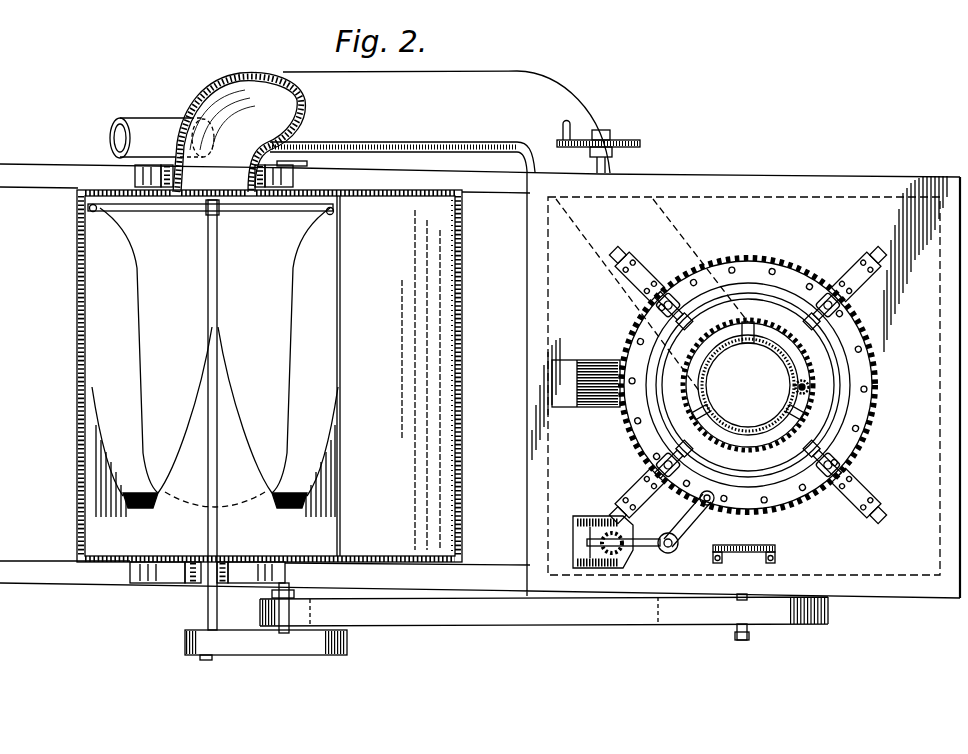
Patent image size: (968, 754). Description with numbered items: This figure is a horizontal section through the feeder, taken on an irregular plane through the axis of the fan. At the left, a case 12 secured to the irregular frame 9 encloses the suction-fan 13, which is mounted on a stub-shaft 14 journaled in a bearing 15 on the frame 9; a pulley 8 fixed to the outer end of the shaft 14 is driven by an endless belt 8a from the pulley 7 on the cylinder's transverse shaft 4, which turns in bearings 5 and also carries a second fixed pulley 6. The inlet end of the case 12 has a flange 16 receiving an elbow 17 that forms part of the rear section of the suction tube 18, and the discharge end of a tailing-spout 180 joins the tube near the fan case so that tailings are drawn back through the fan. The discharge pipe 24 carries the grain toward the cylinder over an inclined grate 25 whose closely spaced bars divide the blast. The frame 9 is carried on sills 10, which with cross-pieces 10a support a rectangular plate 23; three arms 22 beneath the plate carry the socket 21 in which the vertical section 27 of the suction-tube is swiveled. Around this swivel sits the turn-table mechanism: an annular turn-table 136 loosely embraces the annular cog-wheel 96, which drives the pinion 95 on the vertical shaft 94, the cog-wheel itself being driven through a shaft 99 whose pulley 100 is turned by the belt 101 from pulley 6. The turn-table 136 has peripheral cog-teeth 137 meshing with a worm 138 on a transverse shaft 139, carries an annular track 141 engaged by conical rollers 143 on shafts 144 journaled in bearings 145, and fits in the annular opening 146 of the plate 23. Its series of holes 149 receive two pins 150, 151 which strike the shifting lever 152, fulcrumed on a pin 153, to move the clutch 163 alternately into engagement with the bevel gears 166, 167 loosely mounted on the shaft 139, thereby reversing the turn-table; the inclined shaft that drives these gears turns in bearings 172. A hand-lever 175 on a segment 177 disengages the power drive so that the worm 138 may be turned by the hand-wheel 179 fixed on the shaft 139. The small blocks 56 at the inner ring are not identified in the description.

The transverse shaft 4 is at (284, 633).
The bearings 5 is at (306, 166).
The fixed pulley 6 is at (312, 612).
The fixed pulley 7 is at (242, 644).
The pulley 8 is at (222, 642).
The endless belt 8a is at (186, 650).
The irregular shaped frame 9 is at (252, 173).
The sills 10 is at (480, 381).
The cross-pieces 10a is at (547, 468).
The case 12 is at (78, 410).
The suction-fan 13 is at (213, 356).
The stub-shaft 14 is at (206, 618).
The bearing 15 is at (223, 585).
The flange 16 is at (134, 173).
The elbow 17 is at (239, 132).
The suction tube 18 is at (440, 122).
The socket 21 is at (722, 421).
The arms 22 is at (750, 322).
The rectangular plate 23 is at (739, 375).
The discharge pipe 24 is at (436, 380).
The inclined grate 25 is at (462, 426).
The vertical section of the suction-tube 27 is at (748, 385).
The bearing block 56 is at (688, 323).
The vertical shaft 94 is at (808, 389).
The fixed pinion 95 is at (805, 382).
The annular cog-wheel 96 is at (799, 410).
The shaft 99 is at (745, 632).
The pulley 100 is at (656, 631).
The endless belt 101 is at (544, 611).
The annular turn-table 136 is at (866, 406).
The cog-teeth 137 is at (868, 431).
The worm 138 is at (584, 360).
The transverse shaft 139 is at (610, 163).
The annular track 141 is at (747, 282).
The conical rollers 143 is at (658, 306).
The shafts 144 is at (612, 243).
The bearings 145 is at (640, 279).
The annular opening 146 is at (846, 472).
The annular series of holes 149 is at (884, 370).
The pin 150 is at (711, 513).
The pin 151 is at (826, 502).
The shifting lever 152 is at (650, 550).
The pin 153 is at (676, 551).
The clutch 163 is at (572, 538).
The bevel gear 166 is at (573, 560).
The bevel gear 167 is at (572, 518).
The bearings 172 is at (617, 567).
The hand-lever 175 is at (748, 545).
The segment 177 is at (751, 563).
The hand-wheel 179 is at (641, 143).
The discharge end of tailing-spout 180 is at (162, 138).